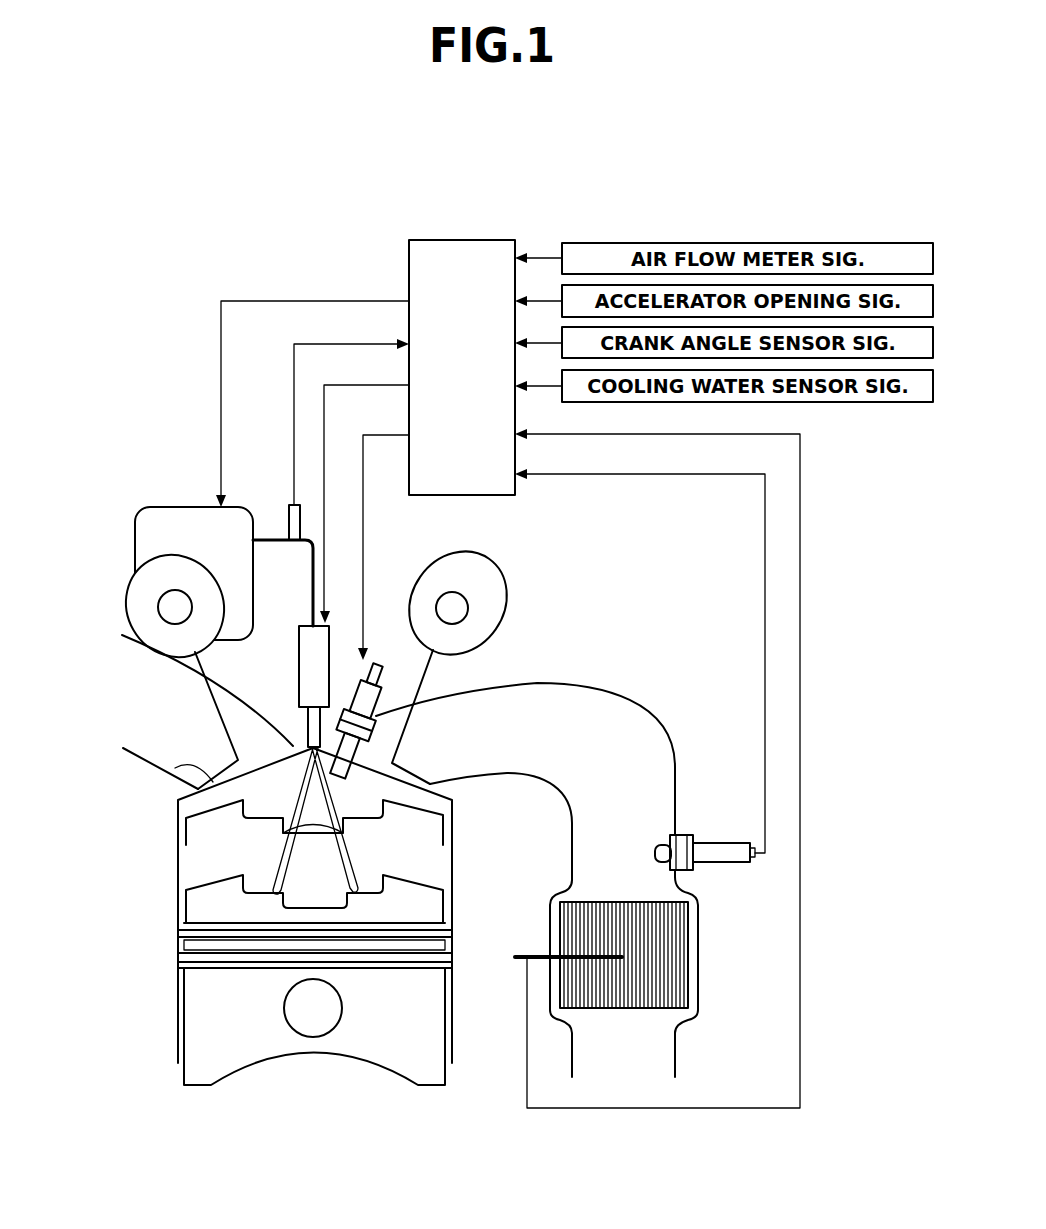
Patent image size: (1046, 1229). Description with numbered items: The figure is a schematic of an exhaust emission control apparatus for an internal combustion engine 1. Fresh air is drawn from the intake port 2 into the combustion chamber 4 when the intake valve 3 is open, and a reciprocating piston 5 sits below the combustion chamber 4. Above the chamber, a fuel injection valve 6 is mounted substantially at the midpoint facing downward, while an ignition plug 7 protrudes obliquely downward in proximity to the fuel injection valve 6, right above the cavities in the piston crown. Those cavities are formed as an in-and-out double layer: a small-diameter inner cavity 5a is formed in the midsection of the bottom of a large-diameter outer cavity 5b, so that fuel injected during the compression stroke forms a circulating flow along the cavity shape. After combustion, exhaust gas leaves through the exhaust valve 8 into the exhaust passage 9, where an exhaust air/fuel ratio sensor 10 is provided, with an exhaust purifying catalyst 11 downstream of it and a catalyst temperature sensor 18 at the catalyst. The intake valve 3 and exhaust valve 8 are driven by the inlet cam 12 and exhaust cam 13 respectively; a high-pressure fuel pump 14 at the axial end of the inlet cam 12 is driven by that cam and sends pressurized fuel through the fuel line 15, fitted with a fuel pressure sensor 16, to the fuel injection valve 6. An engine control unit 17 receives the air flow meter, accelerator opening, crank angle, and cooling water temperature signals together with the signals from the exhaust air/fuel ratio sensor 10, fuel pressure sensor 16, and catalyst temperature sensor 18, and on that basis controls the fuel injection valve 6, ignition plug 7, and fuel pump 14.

The internal combustion engine 1 is at (158, 972).
The intake port 2 is at (167, 718).
The intake valve 3 is at (173, 772).
The combustion chamber 4 is at (277, 782).
The piston 5 is at (197, 905).
The inner cavity 5a is at (283, 829).
The outer cavity 5b is at (375, 902).
The fuel injection valve 6 is at (331, 630).
The ignition plug 7 is at (377, 707).
The exhaust valve 8 is at (408, 772).
The exhaust passage 9 is at (662, 768).
The exhaust air/fuel ratio sensor 10 is at (728, 868).
The exhaust purifying catalyst 11 is at (685, 960).
The inlet cam 12 is at (125, 572).
The exhaust cam 13 is at (510, 582).
The high-pressure fuel pump 14 is at (180, 507).
The fuel line 15 is at (275, 538).
The fuel pressure sensor 16 is at (293, 507).
The engine control unit 17 is at (409, 272).
The catalyst temperature sensor 18 is at (533, 953).